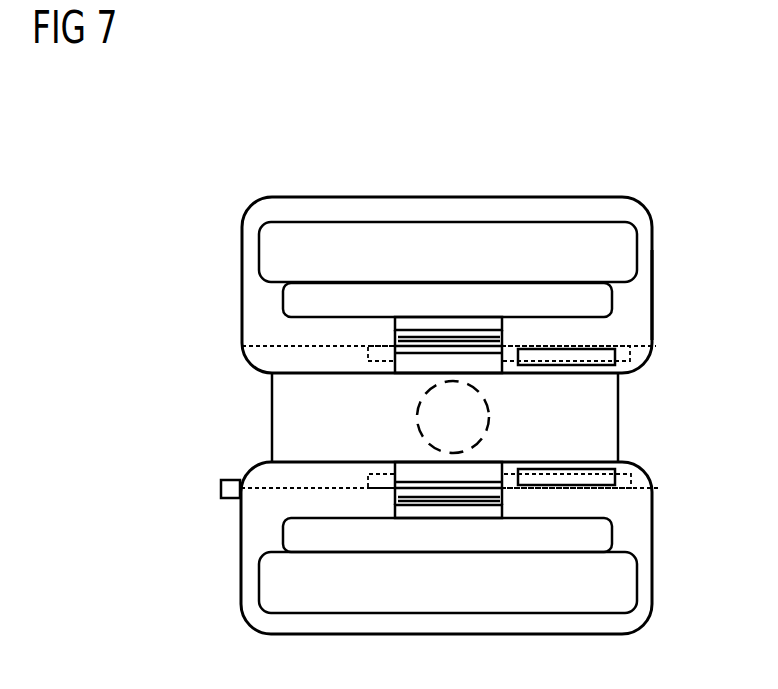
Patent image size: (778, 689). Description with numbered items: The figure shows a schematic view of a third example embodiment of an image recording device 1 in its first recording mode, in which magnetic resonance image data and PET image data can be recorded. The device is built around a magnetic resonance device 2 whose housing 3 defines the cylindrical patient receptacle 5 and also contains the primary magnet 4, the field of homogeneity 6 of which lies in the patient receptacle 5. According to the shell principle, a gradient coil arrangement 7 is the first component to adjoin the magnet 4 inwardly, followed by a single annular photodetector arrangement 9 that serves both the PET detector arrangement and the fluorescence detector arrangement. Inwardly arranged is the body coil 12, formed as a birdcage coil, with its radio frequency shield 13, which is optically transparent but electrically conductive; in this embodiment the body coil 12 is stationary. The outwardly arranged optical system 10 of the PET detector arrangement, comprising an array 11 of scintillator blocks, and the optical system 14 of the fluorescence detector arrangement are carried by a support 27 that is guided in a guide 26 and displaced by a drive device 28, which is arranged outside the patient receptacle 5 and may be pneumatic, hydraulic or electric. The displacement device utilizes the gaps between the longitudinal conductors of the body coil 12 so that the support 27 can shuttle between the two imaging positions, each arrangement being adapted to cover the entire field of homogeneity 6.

The image recording device 1 is at (258, 150).
The magnetic resonance device 2 is at (258, 343).
The housing 3 is at (240, 232).
The primary magnet 4 is at (380, 232).
The patient receptacle 5 is at (252, 426).
The field of homogeneity 6 is at (492, 415).
The gradient coil arrangement 7 is at (295, 303).
The photodetector arrangement 9 is at (432, 323).
The optical system of the PET detector arrangement 10 is at (386, 360).
The array of scintillator blocks 11 is at (481, 350).
The body coil 12 is at (413, 360).
The radio frequency shield 13 is at (388, 327).
The optical system of the fluorescence detector arrangement 14 is at (598, 352).
The guide 26 is at (642, 336).
The support 27 is at (632, 350).
The drive device 28 is at (231, 503).